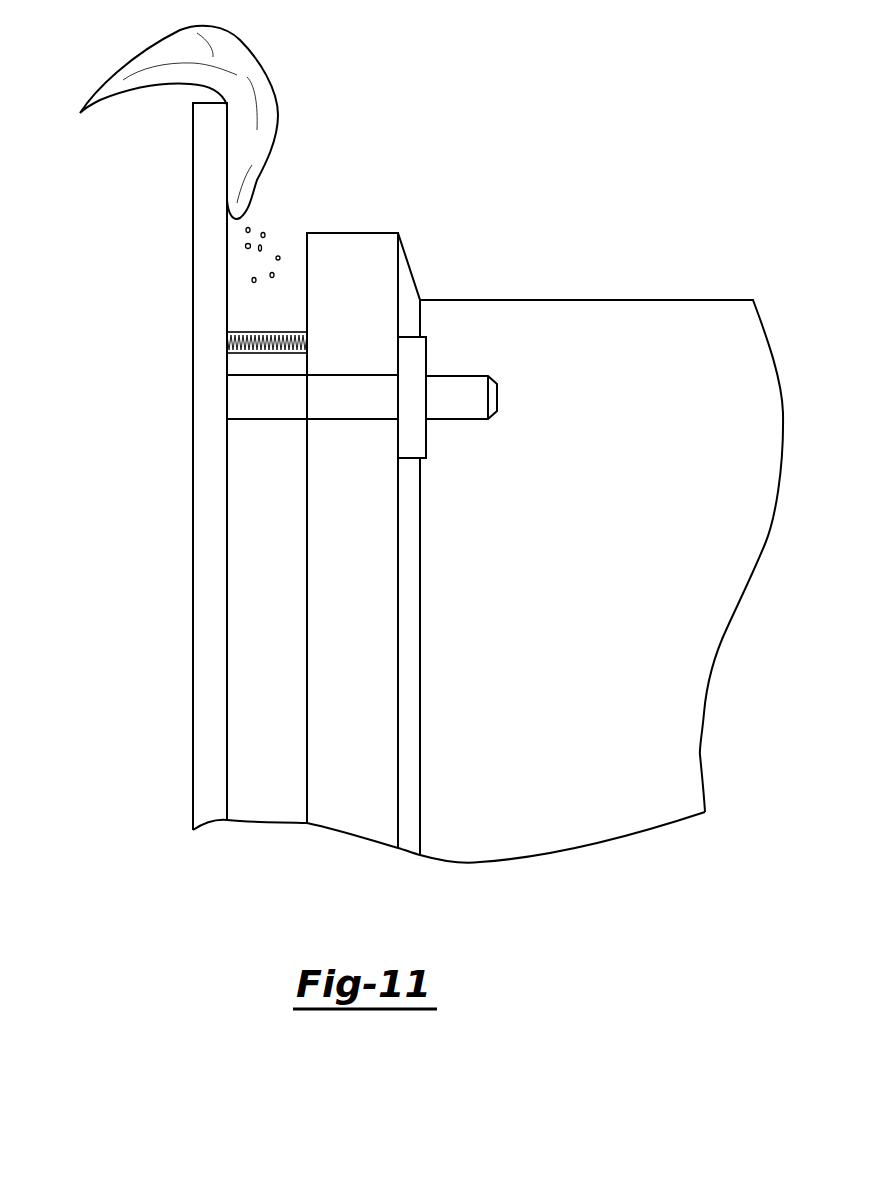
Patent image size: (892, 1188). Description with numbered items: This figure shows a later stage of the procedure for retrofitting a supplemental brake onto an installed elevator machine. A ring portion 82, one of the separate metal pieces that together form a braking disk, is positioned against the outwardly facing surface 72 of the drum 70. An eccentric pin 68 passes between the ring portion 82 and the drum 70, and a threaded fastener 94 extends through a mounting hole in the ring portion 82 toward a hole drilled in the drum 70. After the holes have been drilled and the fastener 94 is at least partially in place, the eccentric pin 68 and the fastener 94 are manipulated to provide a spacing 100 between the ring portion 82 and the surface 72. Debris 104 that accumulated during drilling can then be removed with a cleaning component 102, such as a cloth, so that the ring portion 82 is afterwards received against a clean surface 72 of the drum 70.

The eccentric pin 68 is at (263, 403).
The drum 70 is at (500, 315).
The outwardly facing surface 72 is at (307, 247).
The ring portion 82 is at (193, 182).
The threaded fastener 94 is at (252, 330).
The spacing 100 is at (260, 793).
The cleaning component 102 is at (263, 102).
The debris 104 is at (250, 265).